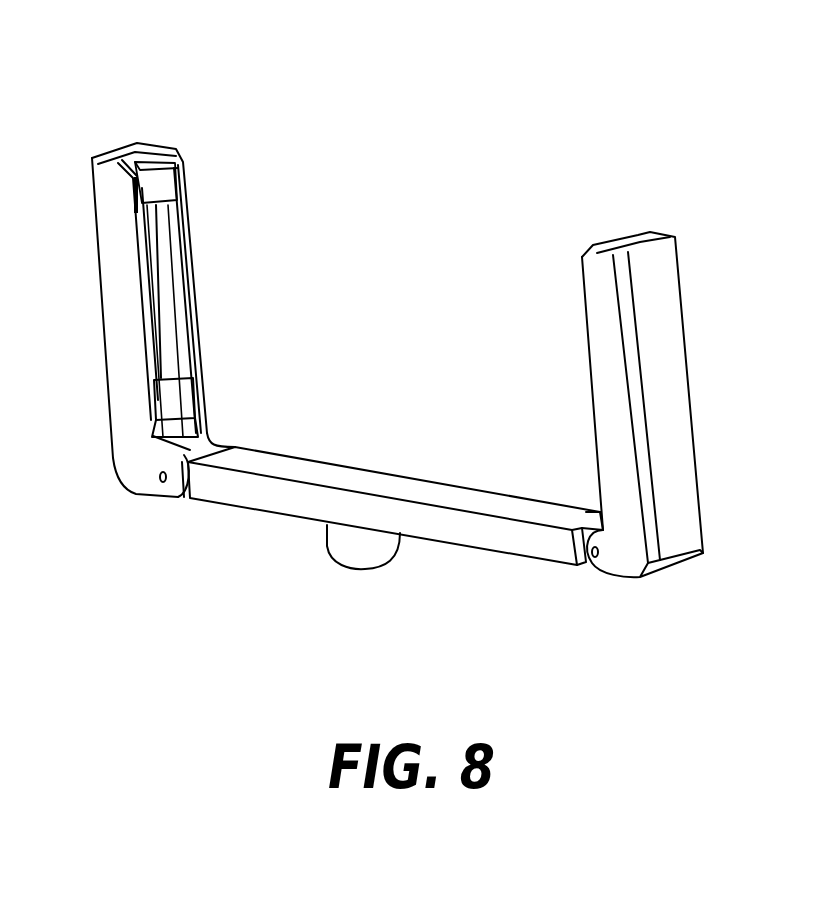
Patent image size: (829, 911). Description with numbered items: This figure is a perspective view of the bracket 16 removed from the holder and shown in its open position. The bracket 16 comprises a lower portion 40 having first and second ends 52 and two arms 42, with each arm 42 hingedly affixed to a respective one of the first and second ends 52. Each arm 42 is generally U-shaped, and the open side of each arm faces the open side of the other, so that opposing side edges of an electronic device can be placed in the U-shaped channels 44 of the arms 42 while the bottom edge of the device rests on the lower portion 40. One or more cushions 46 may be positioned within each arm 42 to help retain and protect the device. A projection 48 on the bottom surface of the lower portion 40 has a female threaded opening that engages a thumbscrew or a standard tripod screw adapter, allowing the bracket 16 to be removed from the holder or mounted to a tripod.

The bracket 16 is at (683, 148).
The lower portion 40 is at (285, 467).
The arm 42 is at (120, 310).
The channel 44 is at (176, 285).
The cushion 46 is at (147, 178).
The projection 48 is at (360, 565).
The first and second ends 52 is at (187, 452).